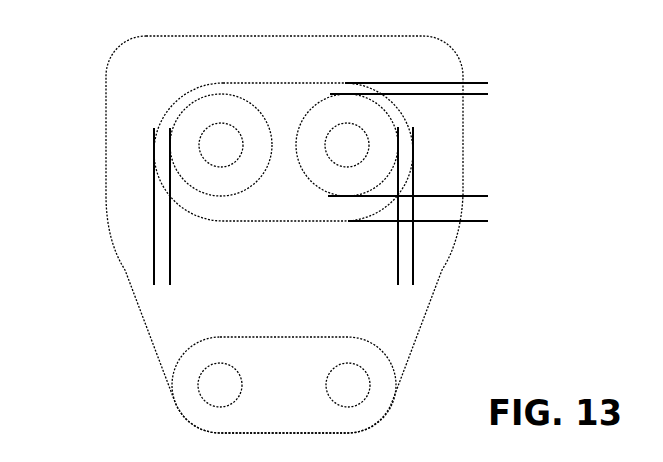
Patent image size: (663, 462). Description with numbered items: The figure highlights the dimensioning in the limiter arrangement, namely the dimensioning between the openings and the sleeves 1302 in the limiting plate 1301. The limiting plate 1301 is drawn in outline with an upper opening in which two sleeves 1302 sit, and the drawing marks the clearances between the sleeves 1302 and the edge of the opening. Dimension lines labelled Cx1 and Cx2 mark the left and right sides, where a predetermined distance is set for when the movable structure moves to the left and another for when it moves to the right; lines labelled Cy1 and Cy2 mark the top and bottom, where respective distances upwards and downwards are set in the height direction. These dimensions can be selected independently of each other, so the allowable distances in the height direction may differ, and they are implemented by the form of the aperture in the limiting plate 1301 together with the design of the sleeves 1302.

The limiting plate 1301 is at (135, 83).
The sleeves 1302 is at (193, 122).
The upper tangent line y-coordinate Cy1 is at (346, 83).
The lower tangent line y-coordinate Cy2 is at (348, 221).
The left tangent line x-coordinate Cx1 is at (154, 142).
The right tangent line x-coordinate Cx2 is at (413, 143).